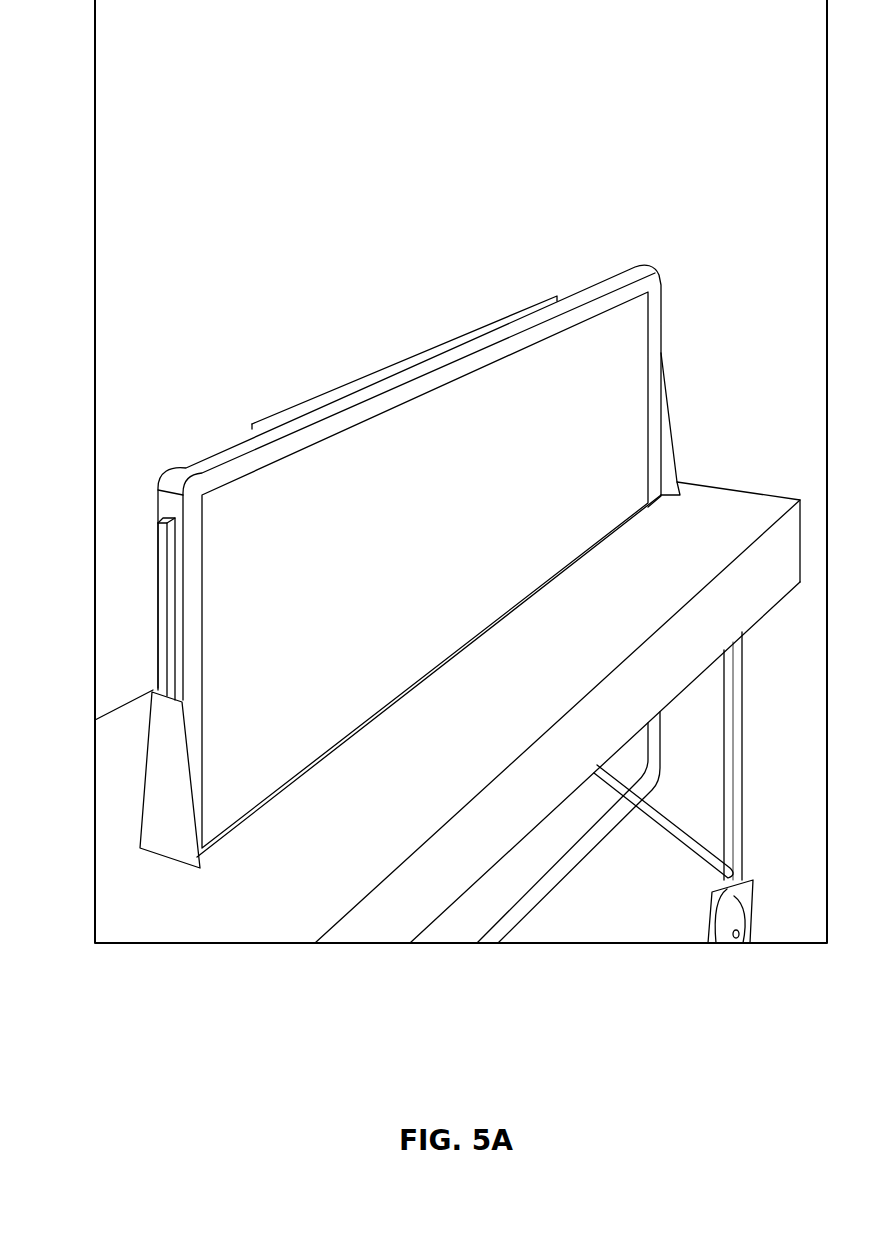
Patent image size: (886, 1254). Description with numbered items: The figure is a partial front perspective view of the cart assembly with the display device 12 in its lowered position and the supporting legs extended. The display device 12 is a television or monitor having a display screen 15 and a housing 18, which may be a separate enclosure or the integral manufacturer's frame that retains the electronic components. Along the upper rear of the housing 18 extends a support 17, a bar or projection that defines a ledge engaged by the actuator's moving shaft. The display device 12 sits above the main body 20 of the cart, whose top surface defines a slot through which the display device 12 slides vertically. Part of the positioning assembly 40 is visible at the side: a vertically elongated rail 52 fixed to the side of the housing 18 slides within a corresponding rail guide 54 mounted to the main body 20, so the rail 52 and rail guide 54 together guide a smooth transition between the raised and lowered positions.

The display device 12 is at (585, 352).
The display screen 15 is at (455, 511).
The support 17 is at (388, 366).
The housing 18 is at (193, 462).
The main body 20 is at (730, 507).
The positioning assembly 40 is at (115, 670).
The rail 52 is at (162, 652).
The rail guide 54 is at (168, 813).